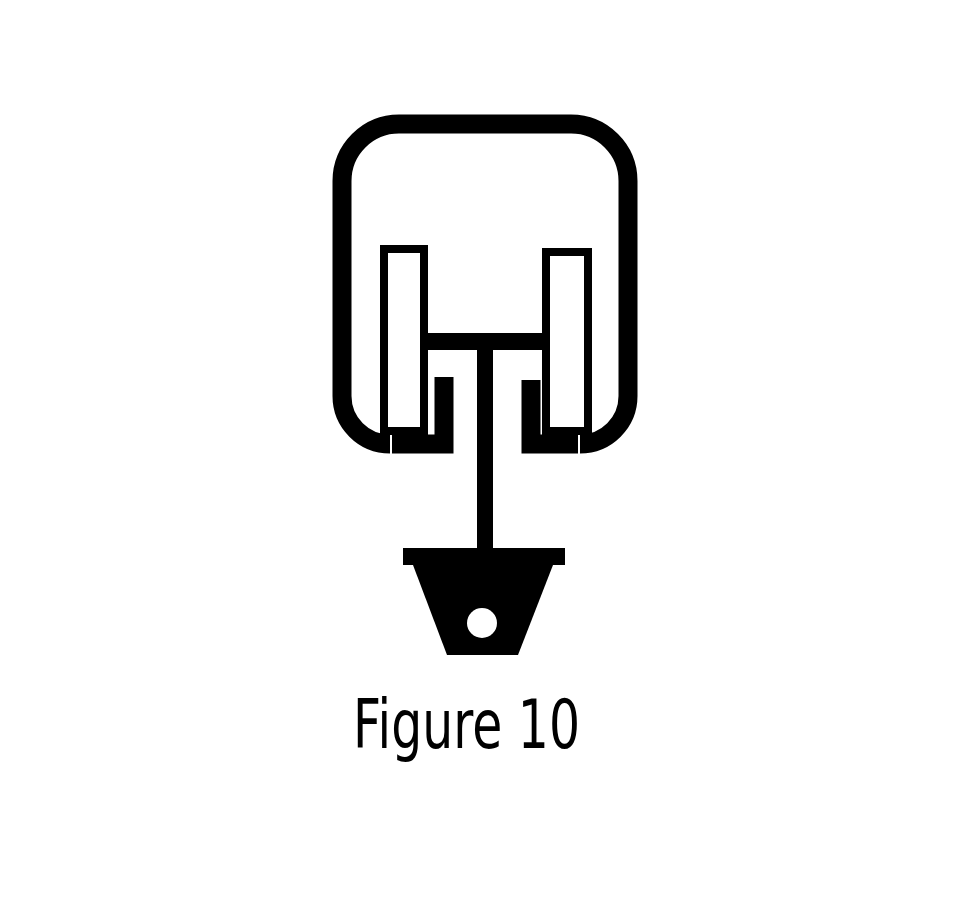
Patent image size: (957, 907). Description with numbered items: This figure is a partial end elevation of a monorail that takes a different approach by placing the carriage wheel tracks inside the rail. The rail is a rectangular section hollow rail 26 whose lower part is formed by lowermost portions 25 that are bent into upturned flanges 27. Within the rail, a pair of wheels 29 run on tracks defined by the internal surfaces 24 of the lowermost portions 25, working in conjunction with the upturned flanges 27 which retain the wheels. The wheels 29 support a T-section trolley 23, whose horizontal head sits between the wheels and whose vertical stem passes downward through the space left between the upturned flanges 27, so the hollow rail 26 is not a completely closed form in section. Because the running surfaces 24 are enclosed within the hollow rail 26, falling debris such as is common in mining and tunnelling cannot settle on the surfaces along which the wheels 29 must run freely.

The T-section trolley 23 is at (497, 485).
The internal surfaces 24 is at (385, 410).
The lowermost portions 25 is at (562, 427).
The rectangular section hollow rail 26 is at (332, 302).
The upturned flanges 27 is at (530, 375).
The wheels 29 is at (500, 302).